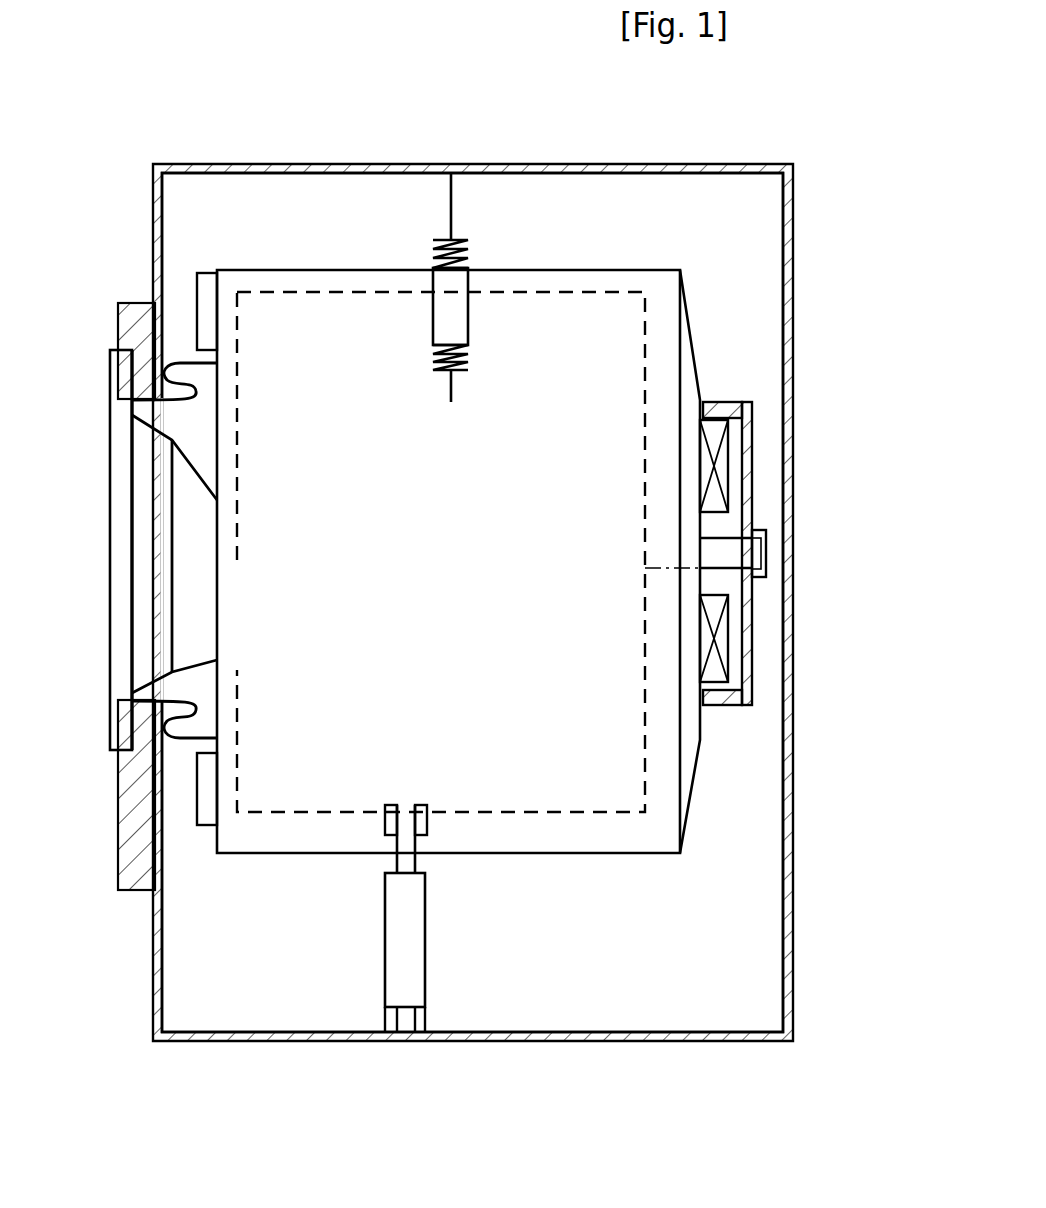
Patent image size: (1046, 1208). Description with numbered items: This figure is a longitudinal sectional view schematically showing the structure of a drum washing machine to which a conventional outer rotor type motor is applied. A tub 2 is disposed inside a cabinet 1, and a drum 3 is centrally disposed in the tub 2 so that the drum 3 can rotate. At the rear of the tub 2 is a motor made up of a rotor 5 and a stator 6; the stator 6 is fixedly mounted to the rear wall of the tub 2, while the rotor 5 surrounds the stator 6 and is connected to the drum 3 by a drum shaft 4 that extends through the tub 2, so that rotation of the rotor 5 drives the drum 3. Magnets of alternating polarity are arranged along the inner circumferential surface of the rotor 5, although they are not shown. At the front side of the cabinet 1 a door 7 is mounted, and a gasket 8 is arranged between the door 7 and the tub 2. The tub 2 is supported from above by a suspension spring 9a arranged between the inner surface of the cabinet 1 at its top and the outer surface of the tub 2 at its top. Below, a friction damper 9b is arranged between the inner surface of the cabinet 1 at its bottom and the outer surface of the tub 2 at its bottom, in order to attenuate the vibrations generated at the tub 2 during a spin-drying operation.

The cabinet 1 is at (249, 165).
The tub 2 is at (590, 268).
The drum 3 is at (345, 290).
The drum shaft 4 is at (720, 548).
The rotor 5 is at (747, 650).
The stator 6 is at (722, 465).
The door 7 is at (117, 568).
The gasket 8 is at (190, 740).
The suspension spring 9a is at (462, 240).
The friction damper 9b is at (410, 948).